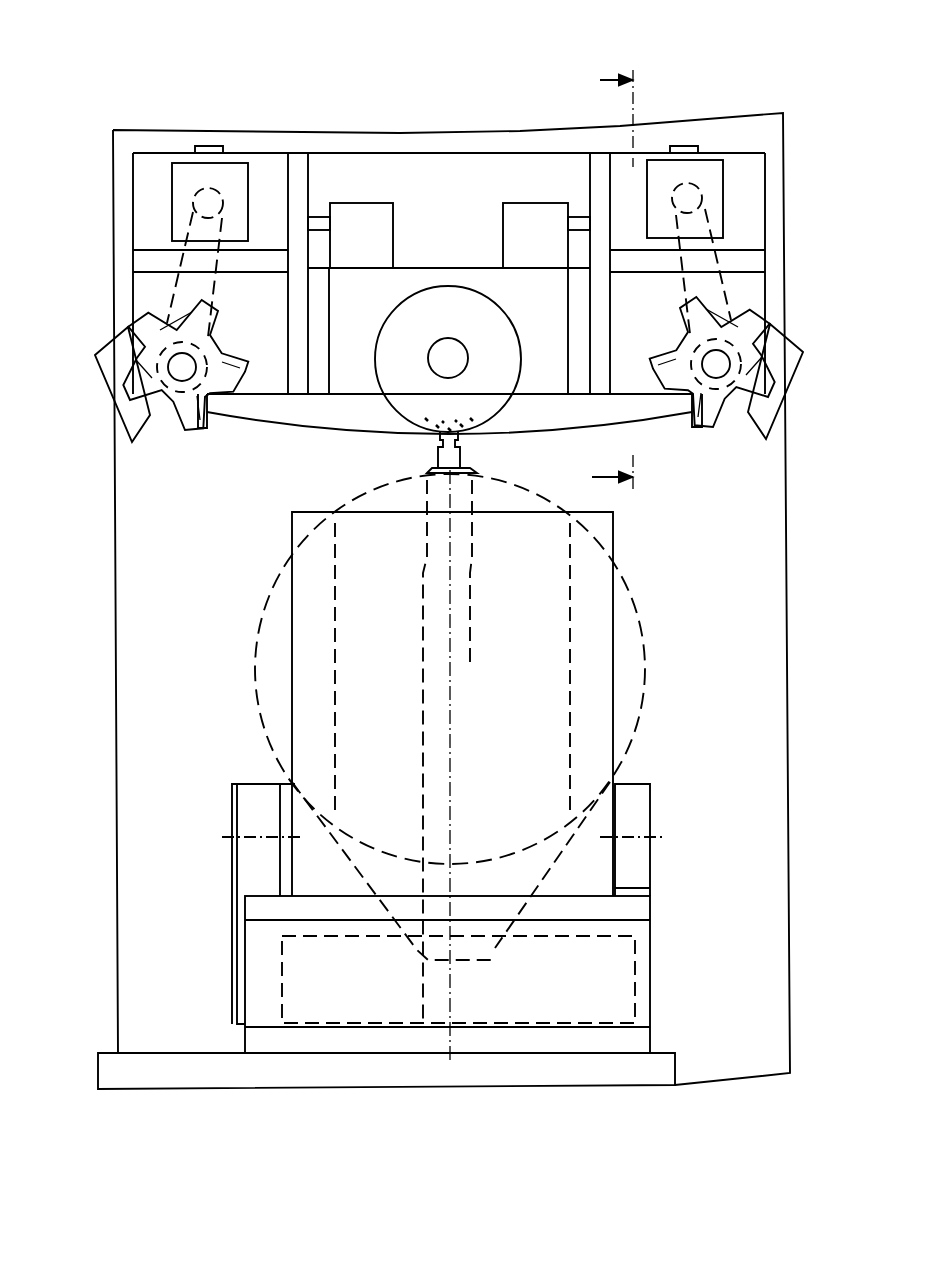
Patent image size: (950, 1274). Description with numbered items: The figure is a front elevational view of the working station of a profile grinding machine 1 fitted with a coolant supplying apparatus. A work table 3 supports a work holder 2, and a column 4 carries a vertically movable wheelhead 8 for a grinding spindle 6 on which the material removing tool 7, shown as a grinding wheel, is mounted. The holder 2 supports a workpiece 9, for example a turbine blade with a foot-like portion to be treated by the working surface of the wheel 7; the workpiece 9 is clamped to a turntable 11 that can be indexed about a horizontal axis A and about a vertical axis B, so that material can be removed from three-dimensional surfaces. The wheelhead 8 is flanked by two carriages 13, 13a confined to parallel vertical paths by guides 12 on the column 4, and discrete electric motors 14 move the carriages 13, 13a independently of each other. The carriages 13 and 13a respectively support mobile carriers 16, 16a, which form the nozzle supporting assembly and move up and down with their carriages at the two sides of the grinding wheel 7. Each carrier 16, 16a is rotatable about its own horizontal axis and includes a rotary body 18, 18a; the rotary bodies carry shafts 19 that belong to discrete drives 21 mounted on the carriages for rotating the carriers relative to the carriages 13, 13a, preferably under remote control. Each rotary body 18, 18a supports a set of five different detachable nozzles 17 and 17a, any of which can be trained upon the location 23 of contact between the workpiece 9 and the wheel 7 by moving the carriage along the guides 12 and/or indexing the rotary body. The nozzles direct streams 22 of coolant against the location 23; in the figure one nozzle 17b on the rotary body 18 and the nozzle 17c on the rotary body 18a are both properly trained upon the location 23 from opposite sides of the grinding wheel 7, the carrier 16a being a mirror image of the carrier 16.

The grinding machine 1 is at (143, 103).
The work holder 2 is at (662, 850).
The work table 3 is at (360, 1055).
The column 4 is at (139, 618).
The grinding spindle 6 is at (457, 353).
The material removing tool 7 is at (403, 335).
The wheelhead 8 is at (405, 283).
The workpiece 9 is at (462, 458).
The turntable 11 is at (638, 660).
The guides 12 is at (298, 183).
The carriage 13 is at (745, 168).
The carriage 13a is at (156, 165).
The electric motors 14 is at (369, 213).
The mobile carrier 16 is at (735, 356).
The mobile carrier 16a is at (384, 362).
The nozzles 17 is at (795, 381).
The nozzles 17a is at (94, 384).
The nozzle 17b is at (697, 428).
The nozzle 17c is at (202, 429).
The rotary body 18 is at (682, 342).
The rotary body 18a is at (213, 342).
The shafts 19 is at (190, 340).
The drives 21 is at (235, 178).
The streams 22 is at (317, 427).
The location of contact 23 is at (422, 448).
The horizontal axis A is at (632, 837).
The vertical axis B is at (453, 977).